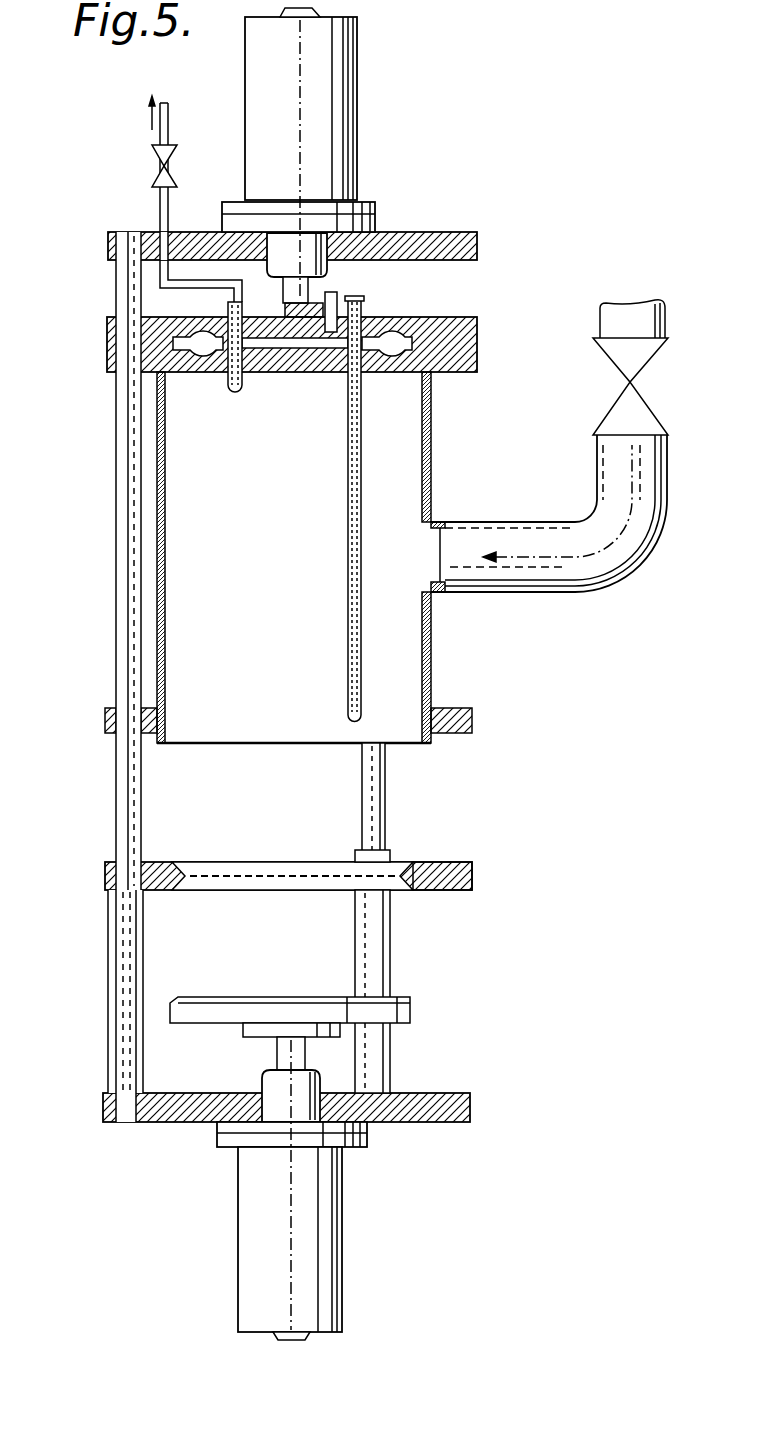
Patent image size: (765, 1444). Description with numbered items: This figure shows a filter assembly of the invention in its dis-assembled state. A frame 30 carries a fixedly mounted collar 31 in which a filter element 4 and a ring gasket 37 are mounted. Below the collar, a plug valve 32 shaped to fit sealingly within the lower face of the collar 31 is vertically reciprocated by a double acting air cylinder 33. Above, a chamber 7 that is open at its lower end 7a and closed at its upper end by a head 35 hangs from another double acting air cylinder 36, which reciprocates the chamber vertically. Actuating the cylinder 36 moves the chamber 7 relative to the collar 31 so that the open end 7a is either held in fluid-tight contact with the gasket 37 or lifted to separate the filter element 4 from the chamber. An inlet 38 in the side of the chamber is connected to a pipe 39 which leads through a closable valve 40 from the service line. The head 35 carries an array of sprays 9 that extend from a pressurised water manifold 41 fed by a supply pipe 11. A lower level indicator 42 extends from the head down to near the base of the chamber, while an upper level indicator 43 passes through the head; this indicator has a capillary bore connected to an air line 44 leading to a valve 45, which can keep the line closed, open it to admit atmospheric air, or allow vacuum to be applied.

The double acting air cylinder 36 is at (322, 93).
The valve 45 is at (163, 177).
The air line 44 is at (160, 217).
The frame 30 is at (110, 638).
The head 35 is at (470, 330).
The supply pipe 11 is at (335, 298).
The sprays 9 is at (207, 358).
The pressurised water manifold 41 is at (287, 348).
The upper level indicator 43 is at (225, 393).
The lower level indicator 42 is at (345, 703).
The closable valve 40 is at (638, 418).
The pipe 39 is at (638, 543).
The inlet 38 is at (438, 592).
The chamber 7 is at (385, 662).
The lower end 7a is at (208, 733).
The ring gasket 37 is at (423, 867).
The filter element 4 is at (312, 890).
The collar 31 is at (450, 888).
The plug valve 32 is at (403, 1000).
The double acting air cylinder 33 is at (255, 1253).